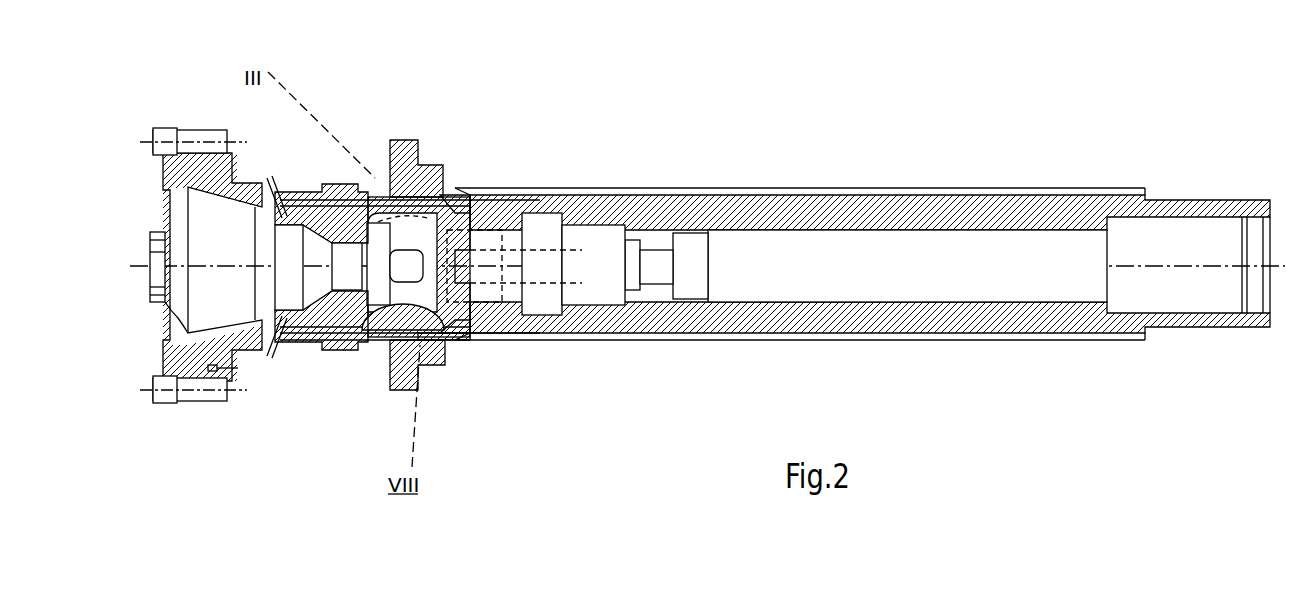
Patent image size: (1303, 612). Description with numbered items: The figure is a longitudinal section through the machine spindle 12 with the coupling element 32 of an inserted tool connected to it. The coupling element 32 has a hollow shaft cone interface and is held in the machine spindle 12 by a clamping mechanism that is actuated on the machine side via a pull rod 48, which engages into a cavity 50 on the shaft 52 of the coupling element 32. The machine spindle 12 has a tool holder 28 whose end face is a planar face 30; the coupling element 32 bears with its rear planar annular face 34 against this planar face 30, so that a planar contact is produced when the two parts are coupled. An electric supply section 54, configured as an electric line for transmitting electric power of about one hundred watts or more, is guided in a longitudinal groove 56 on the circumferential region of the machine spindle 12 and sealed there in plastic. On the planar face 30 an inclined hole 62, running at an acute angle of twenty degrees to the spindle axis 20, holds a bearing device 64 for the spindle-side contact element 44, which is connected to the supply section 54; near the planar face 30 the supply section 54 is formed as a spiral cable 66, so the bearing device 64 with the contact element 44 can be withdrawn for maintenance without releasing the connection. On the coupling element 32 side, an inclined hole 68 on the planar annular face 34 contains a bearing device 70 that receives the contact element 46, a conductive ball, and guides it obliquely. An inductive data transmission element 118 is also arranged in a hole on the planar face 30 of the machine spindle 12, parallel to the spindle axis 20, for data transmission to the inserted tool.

The machine spindle 12 is at (803, 322).
The spindle axis 20 is at (958, 268).
The tool holder 28 is at (424, 340).
The planar face 30 is at (392, 345).
The coupling element 32 is at (317, 312).
The planar annular face 34 is at (372, 330).
The contact element 44 is at (400, 196).
The contact element 46 is at (383, 196).
The pull rod 48 is at (548, 285).
The cavity 50 is at (500, 192).
The shaft 52 is at (440, 368).
The electric supply section 54 is at (537, 193).
The longitudinal groove 56 is at (641, 195).
The inclined hole 62 is at (455, 200).
The bearing device 64 is at (405, 196).
The spiral cable 66 is at (422, 196).
The inclined hole 68 is at (365, 196).
The bearing device 70 is at (255, 238).
The inductive data transmission element 118 is at (452, 338).